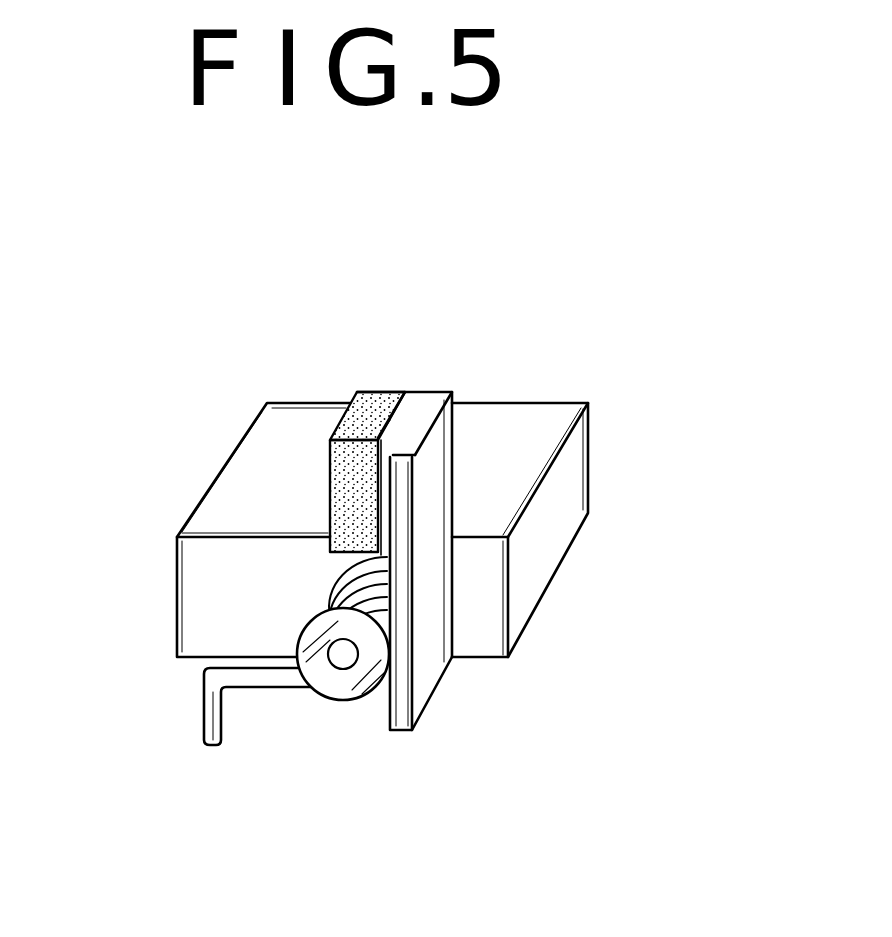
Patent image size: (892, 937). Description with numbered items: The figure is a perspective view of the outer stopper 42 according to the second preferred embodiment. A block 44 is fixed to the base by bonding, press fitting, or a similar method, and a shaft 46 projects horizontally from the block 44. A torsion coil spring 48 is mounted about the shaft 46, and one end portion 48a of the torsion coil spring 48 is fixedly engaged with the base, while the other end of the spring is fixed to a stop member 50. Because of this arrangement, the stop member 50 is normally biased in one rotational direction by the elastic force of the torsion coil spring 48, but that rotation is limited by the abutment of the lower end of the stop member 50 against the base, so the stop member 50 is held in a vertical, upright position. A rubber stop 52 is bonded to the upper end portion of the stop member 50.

The outer stopper 42 is at (381, 378).
The block 44 is at (583, 478).
The shaft 46 is at (340, 668).
The torsion coil spring 48 is at (360, 690).
The one end portion of the torsion coil spring 48a is at (203, 718).
The stop member 50 is at (448, 460).
The rubber stop 52 is at (330, 458).